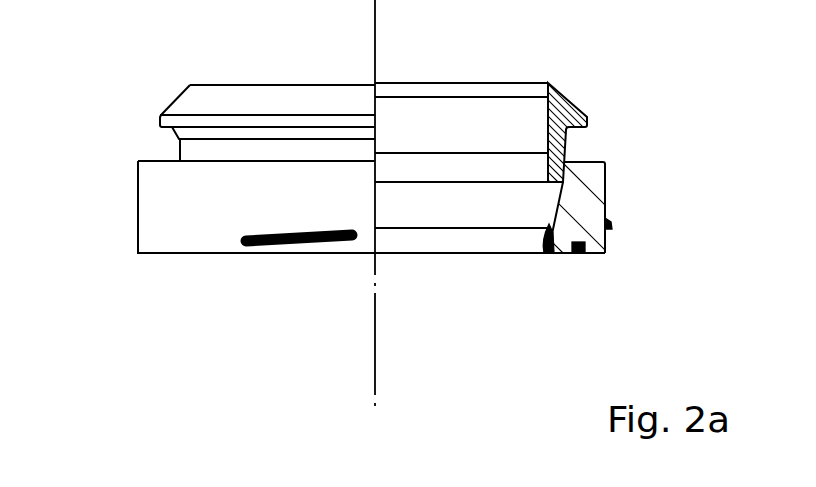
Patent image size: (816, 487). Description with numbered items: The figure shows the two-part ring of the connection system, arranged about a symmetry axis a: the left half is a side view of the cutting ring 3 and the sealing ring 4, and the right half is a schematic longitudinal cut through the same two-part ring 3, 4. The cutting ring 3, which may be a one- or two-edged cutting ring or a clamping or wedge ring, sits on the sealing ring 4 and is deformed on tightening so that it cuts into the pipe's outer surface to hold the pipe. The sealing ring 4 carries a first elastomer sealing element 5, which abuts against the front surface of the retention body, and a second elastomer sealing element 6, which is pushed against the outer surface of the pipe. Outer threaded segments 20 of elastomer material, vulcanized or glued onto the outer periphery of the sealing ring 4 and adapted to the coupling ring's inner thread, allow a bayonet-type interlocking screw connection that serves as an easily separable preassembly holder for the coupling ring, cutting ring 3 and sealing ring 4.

The symmetry axis a is at (373, 0).
The cutting ring 3 is at (197, 103).
The sealing ring 4 is at (182, 187).
The outer threaded segments 20 is at (263, 248).
The first elastomer sealing element 5 is at (578, 255).
The second elastomer sealing element 6 is at (547, 255).